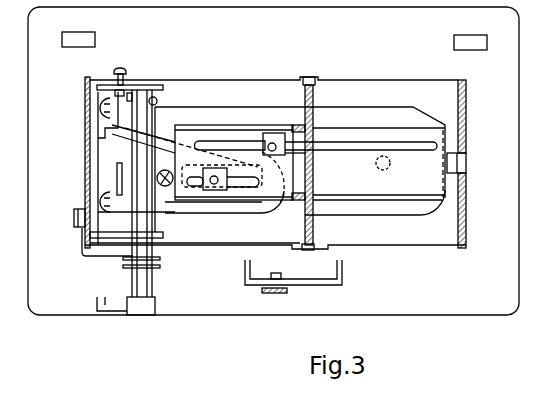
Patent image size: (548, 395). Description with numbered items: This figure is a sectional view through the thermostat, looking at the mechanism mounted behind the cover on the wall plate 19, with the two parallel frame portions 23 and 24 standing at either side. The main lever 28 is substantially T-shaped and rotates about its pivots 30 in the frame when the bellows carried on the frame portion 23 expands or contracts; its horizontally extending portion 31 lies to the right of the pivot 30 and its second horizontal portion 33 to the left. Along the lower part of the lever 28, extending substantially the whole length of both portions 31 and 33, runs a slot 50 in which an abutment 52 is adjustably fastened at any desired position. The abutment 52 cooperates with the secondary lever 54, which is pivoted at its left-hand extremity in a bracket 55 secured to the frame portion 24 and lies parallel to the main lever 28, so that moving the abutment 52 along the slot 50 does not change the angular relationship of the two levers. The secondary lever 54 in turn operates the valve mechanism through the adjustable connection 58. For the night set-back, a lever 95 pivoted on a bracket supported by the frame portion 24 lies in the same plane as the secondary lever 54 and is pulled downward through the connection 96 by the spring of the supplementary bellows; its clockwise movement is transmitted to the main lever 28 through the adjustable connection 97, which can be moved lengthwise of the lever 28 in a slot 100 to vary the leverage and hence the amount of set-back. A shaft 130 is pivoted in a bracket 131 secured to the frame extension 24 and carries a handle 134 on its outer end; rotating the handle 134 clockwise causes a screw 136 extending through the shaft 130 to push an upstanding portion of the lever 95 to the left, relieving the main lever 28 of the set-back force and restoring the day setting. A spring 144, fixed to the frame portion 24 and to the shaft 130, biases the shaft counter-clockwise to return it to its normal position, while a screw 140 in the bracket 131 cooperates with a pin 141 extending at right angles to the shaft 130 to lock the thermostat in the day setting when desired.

The wall plate 19 is at (515, 272).
The portion of the frame 23 is at (466, 208).
The portion of the frame 24 is at (83, 150).
The main lever 28 is at (314, 173).
The pivots 30 is at (307, 78).
The horizontally extending portion 31 is at (384, 124).
The horizontally extending portion 33 is at (233, 124).
The slot 50 is at (403, 150).
The abutment 52 is at (276, 132).
The secondary lever 54 is at (247, 236).
The bracket 55 is at (100, 97).
The adjustable connection 58 is at (383, 172).
The lever 95 is at (168, 203).
The connection 96 is at (165, 170).
The adjustable connection 97 is at (194, 176).
The slot 100 is at (257, 178).
The shaft 130 is at (152, 285).
The bracket 131 is at (143, 85).
The handle 134 is at (137, 315).
The screw 136 is at (142, 180).
The screw 140 is at (121, 69).
The pin 141 is at (157, 100).
The spring 144 is at (160, 262).